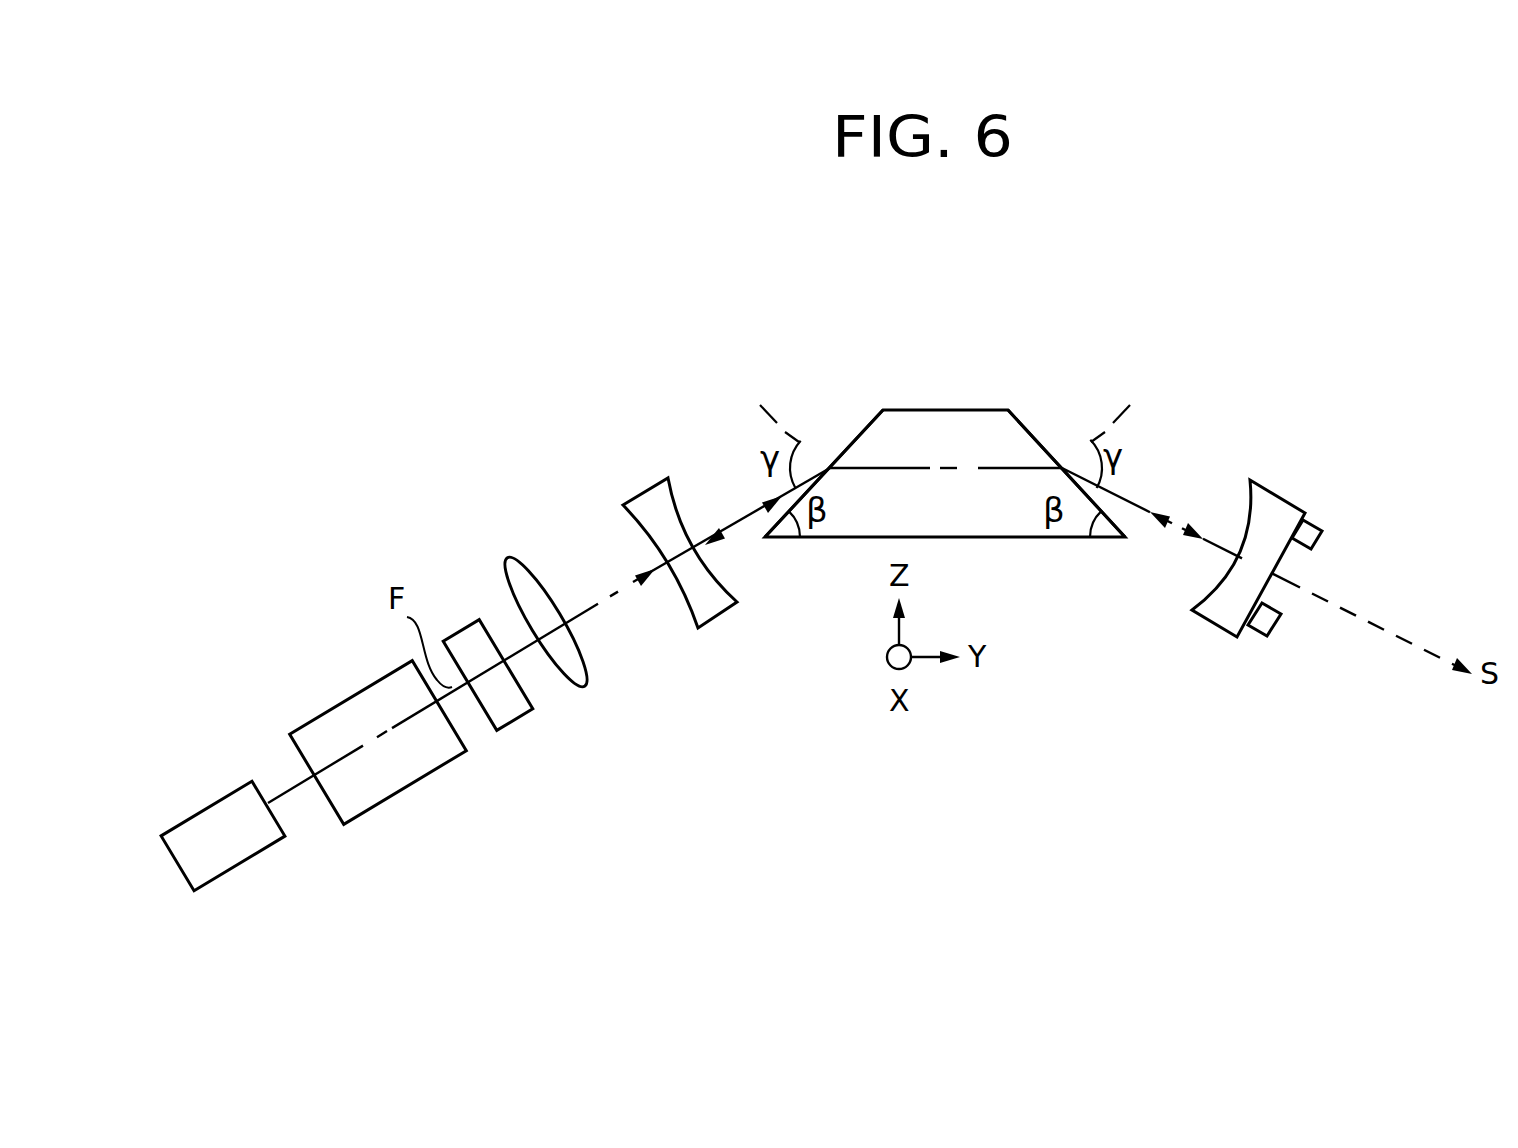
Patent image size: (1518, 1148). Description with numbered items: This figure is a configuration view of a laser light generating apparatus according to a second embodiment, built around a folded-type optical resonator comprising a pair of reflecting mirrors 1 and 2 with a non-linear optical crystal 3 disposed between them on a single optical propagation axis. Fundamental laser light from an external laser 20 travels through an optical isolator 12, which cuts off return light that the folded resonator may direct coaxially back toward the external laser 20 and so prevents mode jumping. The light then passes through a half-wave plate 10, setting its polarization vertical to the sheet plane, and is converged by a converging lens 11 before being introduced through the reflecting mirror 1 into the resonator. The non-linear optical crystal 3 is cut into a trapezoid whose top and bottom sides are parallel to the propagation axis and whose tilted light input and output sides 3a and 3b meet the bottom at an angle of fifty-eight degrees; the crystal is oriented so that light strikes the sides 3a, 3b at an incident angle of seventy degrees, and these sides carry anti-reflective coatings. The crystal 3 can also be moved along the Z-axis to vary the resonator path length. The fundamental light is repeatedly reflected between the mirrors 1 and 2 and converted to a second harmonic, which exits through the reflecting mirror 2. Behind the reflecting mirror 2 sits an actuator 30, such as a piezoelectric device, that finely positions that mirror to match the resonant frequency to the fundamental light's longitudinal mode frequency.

The reflecting mirror 1 is at (650, 507).
The reflecting mirror 2 is at (1270, 515).
The non-linear optical crystal 3 is at (946, 432).
The light input and output side 3a is at (847, 447).
The light input and output side 3b is at (1030, 428).
The half-wave plate 10 is at (463, 643).
The converging lens 11 is at (528, 582).
The optical isolator 12 is at (362, 710).
The external laser 20 is at (217, 835).
The actuator 30 is at (1312, 528).